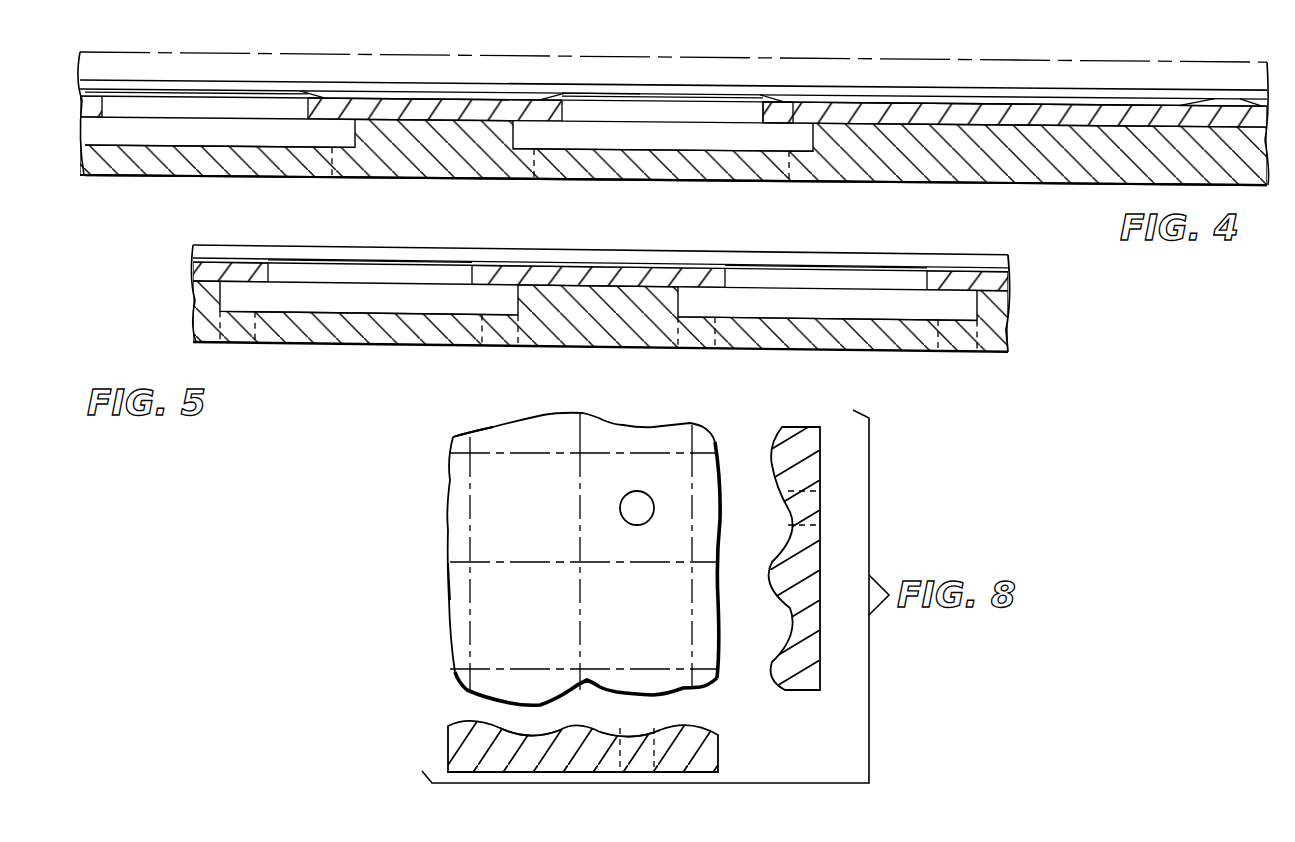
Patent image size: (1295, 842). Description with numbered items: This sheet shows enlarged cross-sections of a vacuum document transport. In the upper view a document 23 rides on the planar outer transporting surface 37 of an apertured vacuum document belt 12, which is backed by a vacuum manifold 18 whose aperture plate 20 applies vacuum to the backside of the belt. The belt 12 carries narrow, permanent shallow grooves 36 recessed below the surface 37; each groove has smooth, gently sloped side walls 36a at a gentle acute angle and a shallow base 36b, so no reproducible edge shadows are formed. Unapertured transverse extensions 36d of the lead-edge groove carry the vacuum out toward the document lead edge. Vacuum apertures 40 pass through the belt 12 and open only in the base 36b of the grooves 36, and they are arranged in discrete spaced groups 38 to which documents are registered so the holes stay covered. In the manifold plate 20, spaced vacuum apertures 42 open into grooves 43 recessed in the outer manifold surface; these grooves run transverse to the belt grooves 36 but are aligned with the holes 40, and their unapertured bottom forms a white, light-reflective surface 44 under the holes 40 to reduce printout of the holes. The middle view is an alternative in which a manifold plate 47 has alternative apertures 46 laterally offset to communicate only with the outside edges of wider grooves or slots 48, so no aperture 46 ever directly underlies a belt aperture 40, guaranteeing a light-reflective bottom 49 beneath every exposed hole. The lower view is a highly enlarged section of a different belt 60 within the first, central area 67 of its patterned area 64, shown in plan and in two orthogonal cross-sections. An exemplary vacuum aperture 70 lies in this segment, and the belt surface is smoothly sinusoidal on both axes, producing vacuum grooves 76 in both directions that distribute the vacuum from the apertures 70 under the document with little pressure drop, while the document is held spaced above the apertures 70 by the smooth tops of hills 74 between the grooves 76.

In FIG. 4, the vacuum document belt 12 is at (1210, 96).
In FIG. 5, the vacuum document belt 12 is at (1003, 271).
In FIG. 4, the vacuum manifold 18 is at (1028, 183).
In FIG. 4, the aperture plate 20 is at (458, 163).
In FIG. 4, the document 23 is at (1080, 60).
In FIG. 4, the shallow grooves 36 is at (852, 86).
In FIG. 5, the shallow grooves 36 is at (587, 255).
In FIG. 4, the side walls 36a is at (367, 92).
In FIG. 4, the base 36b is at (515, 100).
In FIG. 4, the transverse groove extensions 36d is at (1036, 96).
In FIG. 4, the document transporting outer surface 37 is at (588, 85).
In FIG. 4, the spaced groups 38 is at (780, 74).
In FIG. 4, the vacuum apertures 40 is at (232, 105).
In FIG. 5, the vacuum apertures 40 is at (418, 270).
In FIG. 4, the vacuum apertures 42 is at (270, 180).
In FIG. 4, the grooves 43 is at (203, 138).
In FIG. 4, the light reflective bottom manifold surface 44 is at (120, 136).
In FIG. 5, the alternative apertures 46 is at (249, 311).
In FIG. 5, the alternative manifold plate 47 is at (1012, 312).
In FIG. 5, the grooves or slots 48 is at (334, 292).
In FIG. 5, the light reflective bottom 49 is at (378, 308).
In FIG. 8, the belt 60 is at (448, 530).
In FIG. 8, the patterned area 64 is at (494, 481).
In FIG. 8, the first central area 67 is at (432, 574).
In FIG. 8, the vacuum apertures 70 is at (654, 507).
In FIG. 8, the tops of hills 74 is at (692, 563).
In FIG. 8, the vacuum grooves 76 is at (530, 432).